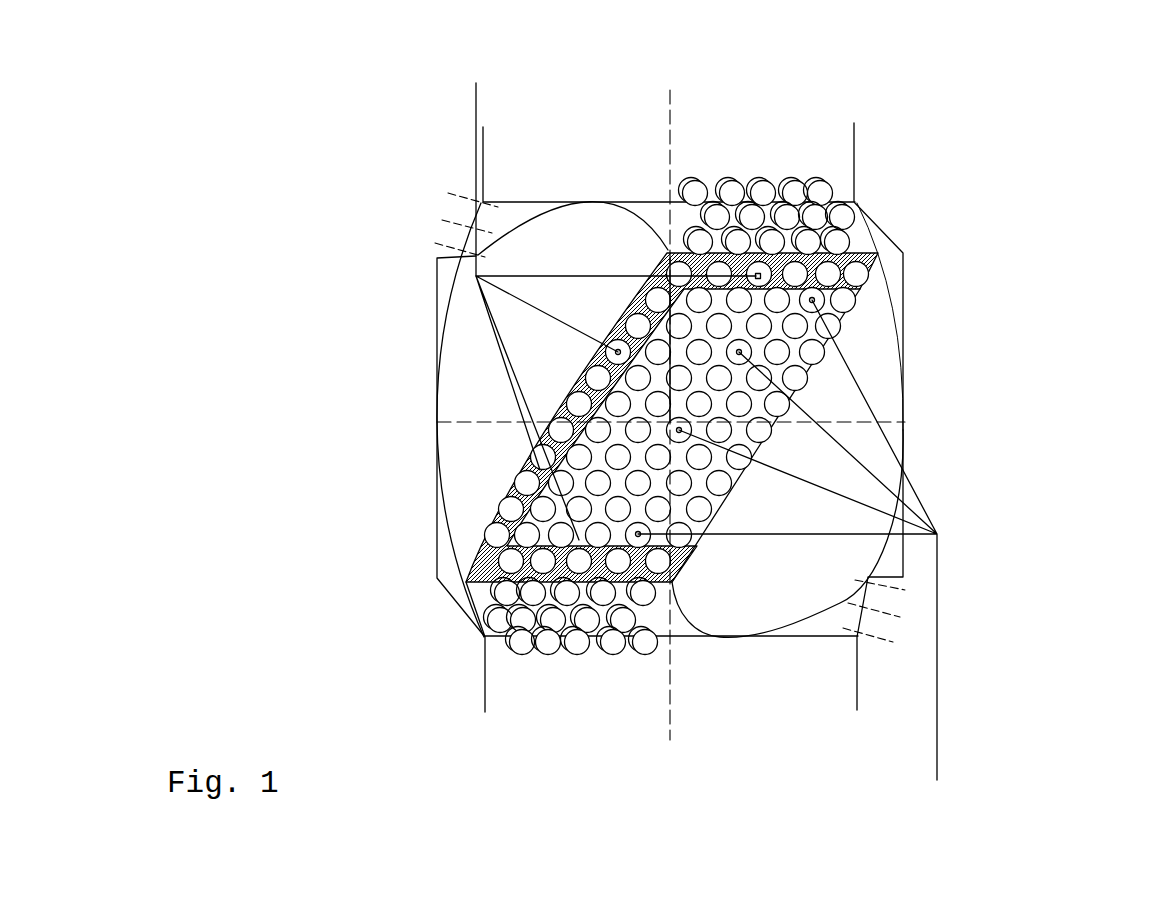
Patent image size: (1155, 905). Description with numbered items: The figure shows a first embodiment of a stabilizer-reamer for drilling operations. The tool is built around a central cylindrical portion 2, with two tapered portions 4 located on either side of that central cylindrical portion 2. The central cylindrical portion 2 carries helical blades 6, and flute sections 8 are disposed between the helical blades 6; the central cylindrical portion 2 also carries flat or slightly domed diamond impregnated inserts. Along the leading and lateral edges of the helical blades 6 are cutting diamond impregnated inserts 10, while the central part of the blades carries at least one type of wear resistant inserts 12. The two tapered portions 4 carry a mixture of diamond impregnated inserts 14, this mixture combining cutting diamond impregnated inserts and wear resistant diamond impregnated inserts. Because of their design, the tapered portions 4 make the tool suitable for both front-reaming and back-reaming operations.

The central cylindrical portion 2 is at (427, 425).
The tapered portions 4 is at (895, 233).
The helical blades 6 is at (830, 345).
The flute sections 8 is at (465, 365).
The cutting diamond impregnated inserts 10 is at (480, 158).
The wear resistant inserts 12 is at (801, 557).
The diamond impregnated inserts 14 is at (838, 242).